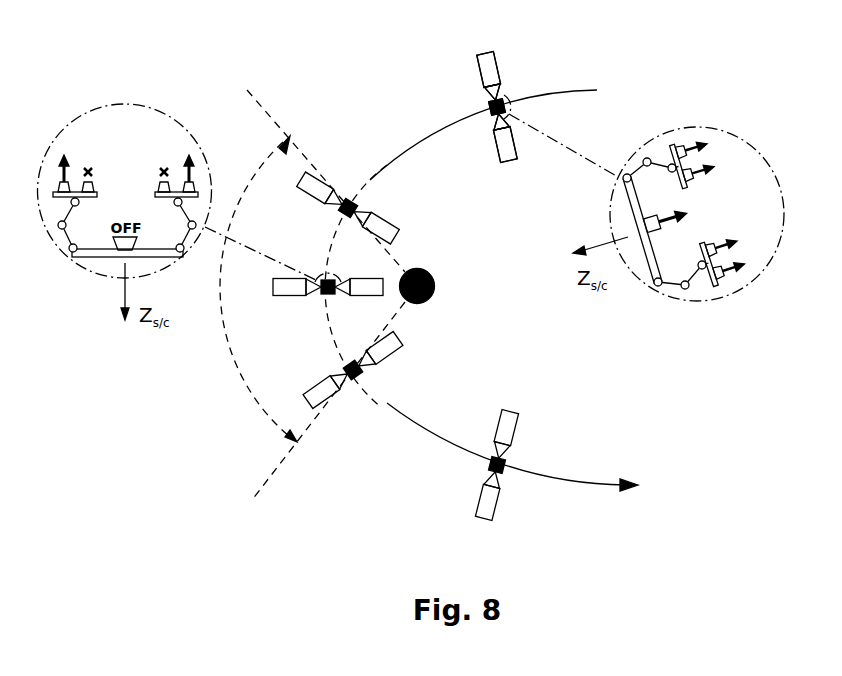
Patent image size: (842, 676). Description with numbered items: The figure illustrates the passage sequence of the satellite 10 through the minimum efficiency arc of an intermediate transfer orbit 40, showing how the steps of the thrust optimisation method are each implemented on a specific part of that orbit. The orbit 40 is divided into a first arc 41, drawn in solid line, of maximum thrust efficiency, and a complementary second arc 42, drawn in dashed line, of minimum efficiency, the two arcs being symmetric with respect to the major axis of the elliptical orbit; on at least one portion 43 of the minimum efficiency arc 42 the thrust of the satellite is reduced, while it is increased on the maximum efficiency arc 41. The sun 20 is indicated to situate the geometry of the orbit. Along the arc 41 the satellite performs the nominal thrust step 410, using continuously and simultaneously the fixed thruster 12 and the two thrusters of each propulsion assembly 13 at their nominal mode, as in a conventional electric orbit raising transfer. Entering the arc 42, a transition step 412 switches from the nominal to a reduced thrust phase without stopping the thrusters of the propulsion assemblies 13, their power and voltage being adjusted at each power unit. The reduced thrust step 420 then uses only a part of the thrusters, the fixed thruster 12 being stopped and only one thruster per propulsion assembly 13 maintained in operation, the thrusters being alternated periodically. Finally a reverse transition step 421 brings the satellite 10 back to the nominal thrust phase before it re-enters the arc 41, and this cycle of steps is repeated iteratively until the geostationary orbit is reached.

The satellite 10 is at (478, 94).
The fixed thruster 12 is at (650, 218).
The propulsion assembly 13 is at (693, 287).
The sun 20 is at (435, 284).
The intermediate orbit 40 is at (562, 477).
The maximum efficiency arc 41 is at (442, 128).
The minimum efficiency arc 42 is at (377, 396).
The portion of the minimum efficiency arc 43 is at (232, 346).
The nominal thrust step 410 is at (516, 81).
The transition step 412 is at (330, 171).
The reduced thrust step 420 is at (287, 245).
The reverse transition step 421 is at (286, 363).